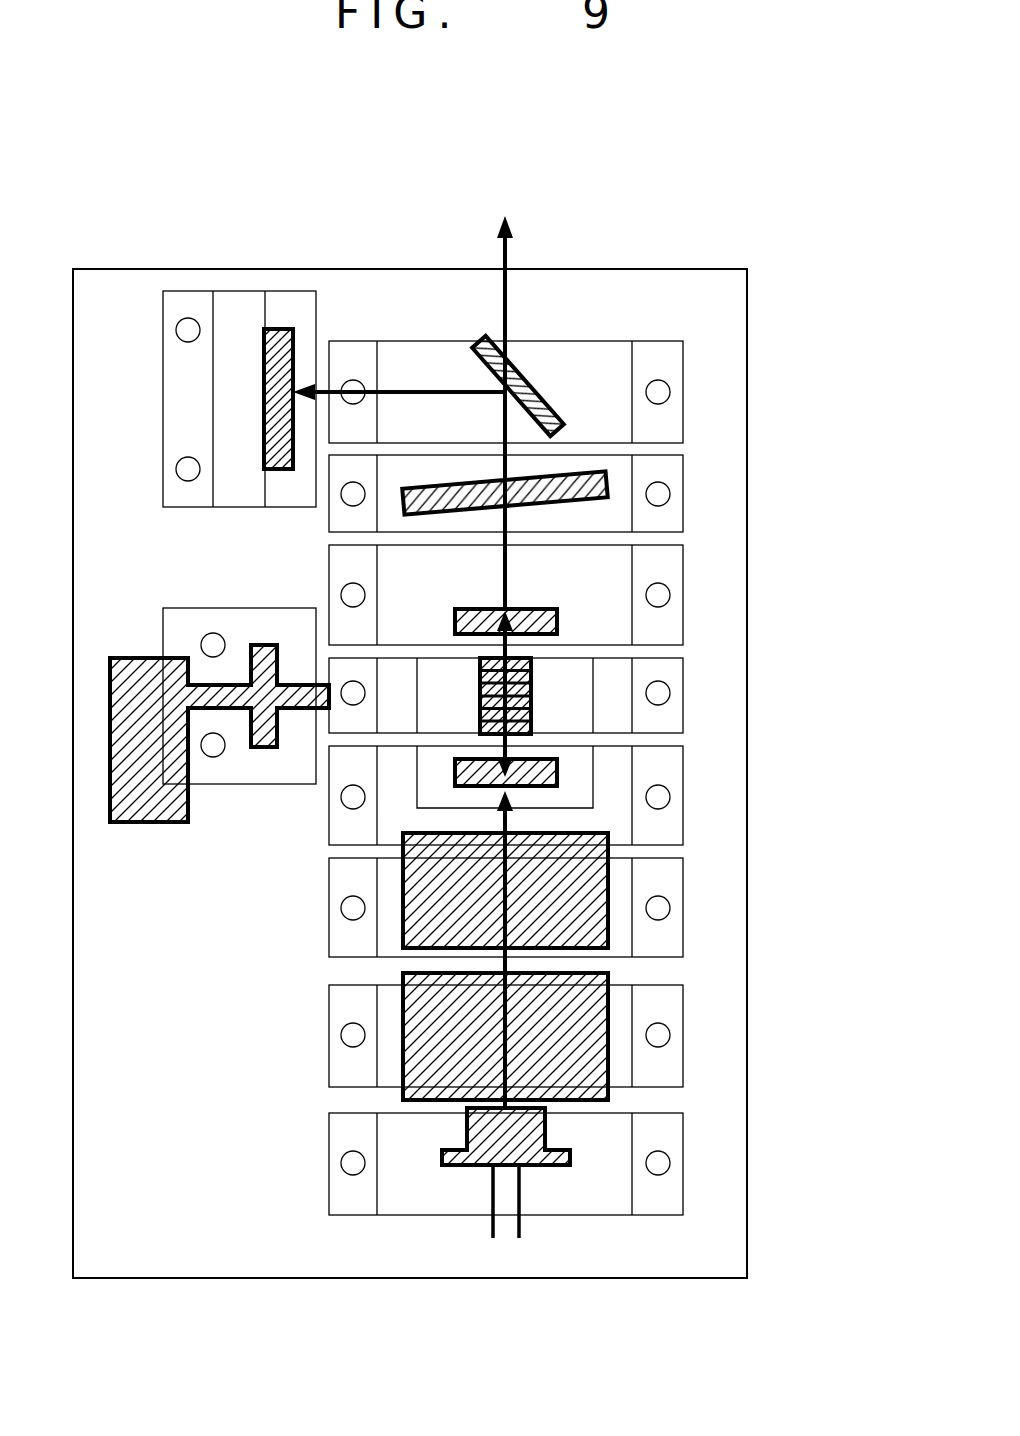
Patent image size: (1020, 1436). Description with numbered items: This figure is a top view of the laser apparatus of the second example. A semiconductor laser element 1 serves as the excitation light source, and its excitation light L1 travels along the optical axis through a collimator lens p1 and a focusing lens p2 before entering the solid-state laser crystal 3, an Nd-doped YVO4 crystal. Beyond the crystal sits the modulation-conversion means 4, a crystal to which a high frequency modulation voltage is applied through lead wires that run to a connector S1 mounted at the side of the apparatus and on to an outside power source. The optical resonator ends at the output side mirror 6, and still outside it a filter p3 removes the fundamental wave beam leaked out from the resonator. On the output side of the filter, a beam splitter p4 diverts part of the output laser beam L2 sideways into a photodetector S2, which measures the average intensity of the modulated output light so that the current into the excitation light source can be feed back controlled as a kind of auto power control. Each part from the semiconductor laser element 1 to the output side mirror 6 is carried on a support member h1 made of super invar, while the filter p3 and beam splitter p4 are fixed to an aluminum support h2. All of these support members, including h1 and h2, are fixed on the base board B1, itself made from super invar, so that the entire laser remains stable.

The base board B1 is at (160, 1235).
The support member h1 is at (618, 592).
The support h2 is at (618, 405).
The connector S1 is at (128, 822).
The photodetector S2 is at (265, 348).
The collimator lens p1 is at (605, 1049).
The focusing lens p2 is at (605, 928).
The filter p3 is at (578, 476).
The beam splitter p4 is at (522, 373).
The excitation light L1 is at (505, 870).
The output laser beam L2 is at (497, 255).
The semiconductor laser element 1 is at (548, 1136).
The solid-state laser crystal 3 is at (558, 773).
The modulation-conversion means 4 is at (532, 690).
The output side mirror 6 is at (558, 621).